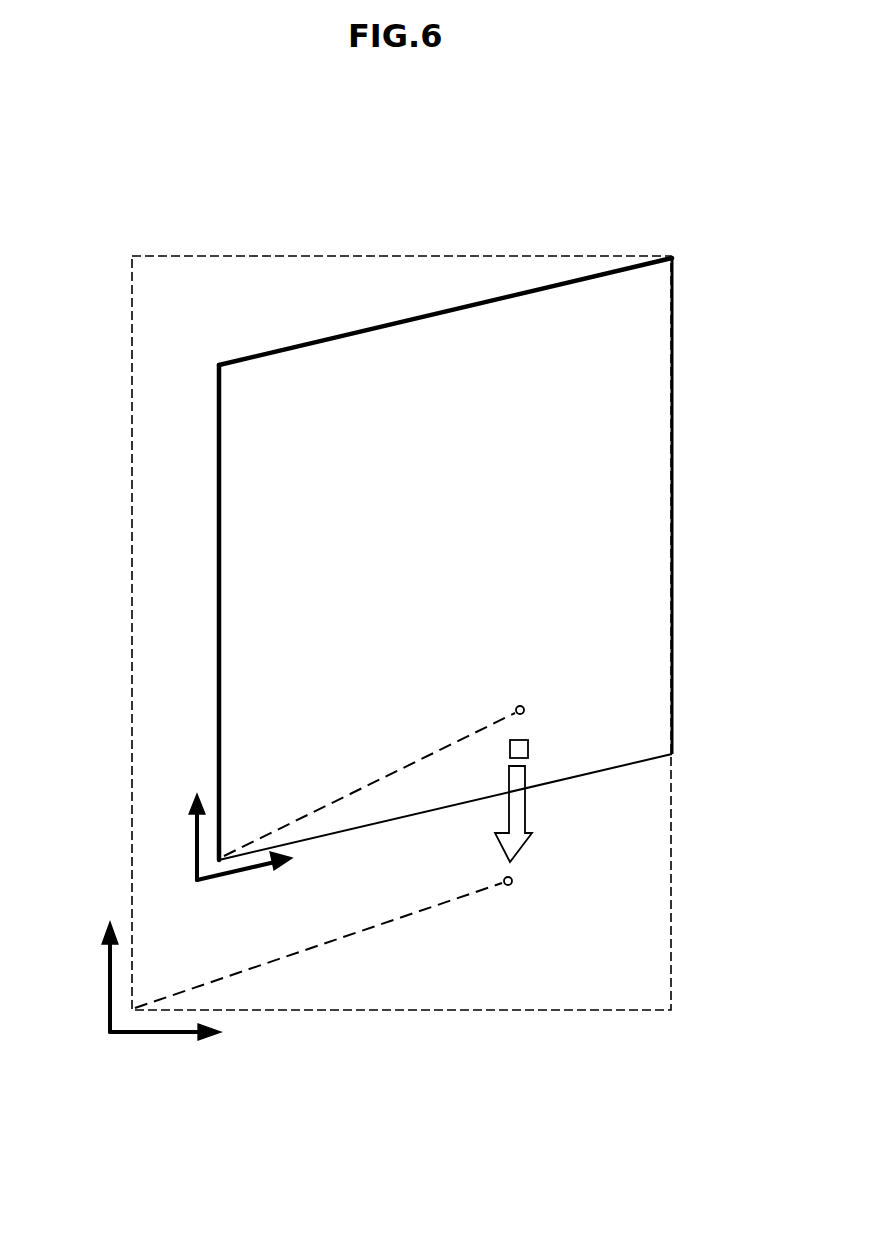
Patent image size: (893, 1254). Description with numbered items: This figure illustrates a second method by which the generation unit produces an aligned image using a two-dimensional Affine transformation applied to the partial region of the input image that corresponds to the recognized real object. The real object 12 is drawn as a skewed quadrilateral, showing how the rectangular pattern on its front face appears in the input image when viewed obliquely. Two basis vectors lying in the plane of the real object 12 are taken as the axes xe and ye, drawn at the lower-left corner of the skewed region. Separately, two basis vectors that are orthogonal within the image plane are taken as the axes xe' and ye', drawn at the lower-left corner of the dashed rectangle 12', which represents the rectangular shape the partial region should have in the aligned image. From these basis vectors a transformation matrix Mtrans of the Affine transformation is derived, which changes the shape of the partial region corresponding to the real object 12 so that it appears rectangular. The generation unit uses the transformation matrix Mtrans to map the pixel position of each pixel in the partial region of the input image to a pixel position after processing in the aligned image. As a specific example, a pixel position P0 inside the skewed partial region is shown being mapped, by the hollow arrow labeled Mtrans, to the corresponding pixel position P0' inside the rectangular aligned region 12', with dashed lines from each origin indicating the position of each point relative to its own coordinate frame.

The real object 12 is at (492, 559).
The real object after transformation 12' is at (458, 633).
The pixel position in the partial region P0 is at (391, 763).
The pixel position in the aligned image P0' is at (330, 942).
The transformation matrix Mtrans is at (548, 801).
The basis vector in the plane of the real object xe is at (244, 876).
The basis vector in the plane of the real object ye is at (182, 837).
The basis vector orthogonal within the image plane xe' is at (165, 1056).
The basis vector orthogonal within the image plane ye' is at (87, 977).